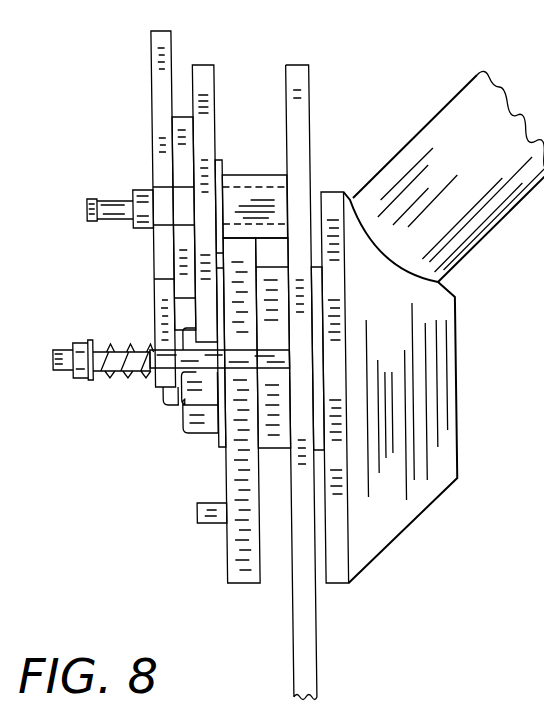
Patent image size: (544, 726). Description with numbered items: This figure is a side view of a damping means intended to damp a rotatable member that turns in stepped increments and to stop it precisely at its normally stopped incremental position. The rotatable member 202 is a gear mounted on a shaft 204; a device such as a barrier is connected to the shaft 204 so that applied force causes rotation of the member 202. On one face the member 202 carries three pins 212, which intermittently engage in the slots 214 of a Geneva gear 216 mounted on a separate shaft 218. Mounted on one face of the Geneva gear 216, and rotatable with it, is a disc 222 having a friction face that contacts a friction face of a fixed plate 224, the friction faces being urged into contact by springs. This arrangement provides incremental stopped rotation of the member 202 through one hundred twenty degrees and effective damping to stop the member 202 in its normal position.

The rotatable member 202 is at (221, 478).
The shaft 204 is at (311, 452).
The pins 212 is at (203, 523).
The slots 214 is at (266, 187).
The Geneva gear 216 is at (211, 80).
The shaft 218 is at (293, 143).
The disc 222 is at (181, 115).
The fixed plate 224 is at (150, 42).